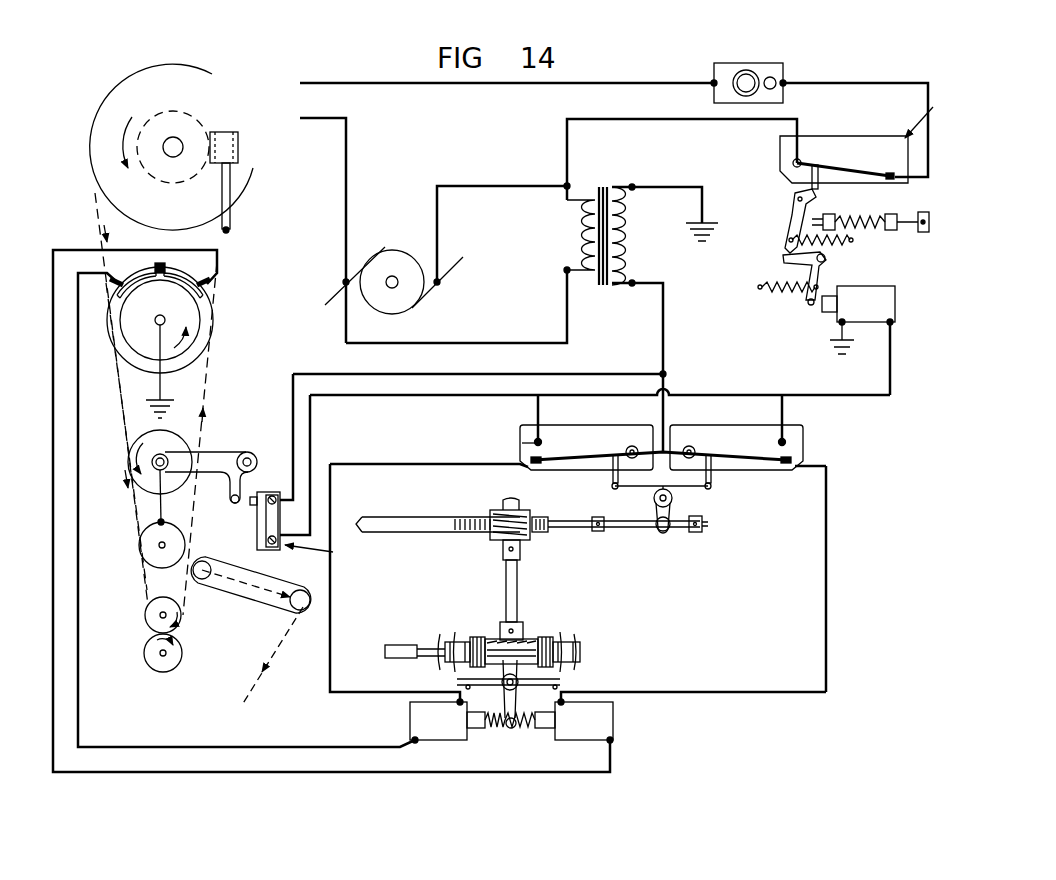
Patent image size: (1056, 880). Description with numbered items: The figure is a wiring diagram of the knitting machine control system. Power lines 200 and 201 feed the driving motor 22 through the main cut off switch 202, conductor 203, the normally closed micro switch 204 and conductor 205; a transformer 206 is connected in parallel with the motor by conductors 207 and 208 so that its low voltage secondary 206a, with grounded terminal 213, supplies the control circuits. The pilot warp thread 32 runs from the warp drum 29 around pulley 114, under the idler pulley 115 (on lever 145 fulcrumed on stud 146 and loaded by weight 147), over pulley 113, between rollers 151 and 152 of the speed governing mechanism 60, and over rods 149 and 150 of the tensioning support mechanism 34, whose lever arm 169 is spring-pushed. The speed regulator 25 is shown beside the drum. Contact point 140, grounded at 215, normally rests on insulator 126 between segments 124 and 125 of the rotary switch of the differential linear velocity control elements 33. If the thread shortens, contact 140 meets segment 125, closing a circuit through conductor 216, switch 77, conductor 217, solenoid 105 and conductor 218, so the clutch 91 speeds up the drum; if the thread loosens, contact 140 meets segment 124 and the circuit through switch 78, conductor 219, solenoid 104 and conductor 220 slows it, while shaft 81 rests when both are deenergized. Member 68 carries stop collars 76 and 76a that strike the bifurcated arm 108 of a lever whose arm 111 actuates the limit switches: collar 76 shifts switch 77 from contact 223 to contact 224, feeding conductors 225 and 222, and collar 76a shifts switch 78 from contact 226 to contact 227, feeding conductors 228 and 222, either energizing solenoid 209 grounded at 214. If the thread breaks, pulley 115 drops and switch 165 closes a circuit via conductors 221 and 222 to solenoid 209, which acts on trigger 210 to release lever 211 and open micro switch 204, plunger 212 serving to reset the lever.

The warp drum 29 is at (117, 105).
The pilot warp thread 32 is at (97, 195).
The speed regulator 25 is at (231, 194).
The segment 124 is at (132, 275).
The insulator 126 is at (160, 272).
The segment 125 is at (187, 275).
The pulley 113 is at (213, 336).
The pulley 114 is at (201, 319).
The contact point 140 is at (160, 314).
The grounding 215 is at (165, 402).
The differential linear velocity control elements 33 is at (111, 459).
The lever 145 is at (215, 452).
The stud 146 is at (249, 458).
The idler pulley 115 is at (177, 481).
The arm 169 is at (228, 500).
The weight 147 is at (158, 546).
The switch 165 is at (257, 538).
The roller 151 is at (163, 598).
The roller 152 is at (144, 657).
The warp thread speed governing mechanism 60 is at (128, 641).
The rod 149 is at (213, 580).
The rod 150 is at (292, 606).
The tensioning support mechanism 34 is at (276, 577).
The driving motor 22 is at (403, 304).
The line 200 is at (343, 79).
The line 201 is at (317, 121).
The conductor 208 is at (488, 342).
The main cut off switch 202 is at (733, 64).
The conductor 203 is at (860, 82).
The conductor 205 is at (611, 118).
The micro switch 204 is at (817, 136).
The conductor 207 is at (572, 192).
The transformer 206 is at (565, 227).
The low voltage secondary 206a is at (638, 249).
The grounded terminal 213 is at (668, 187).
The conductor 216 is at (665, 334).
The lever 211 is at (790, 212).
The plunger 212 is at (907, 215).
The trigger 210 is at (823, 268).
The solenoid 209 is at (883, 290).
The ground 214 is at (840, 332).
The conductor 221 is at (387, 374).
The conductor 222 is at (365, 398).
The conductor 228 is at (540, 412).
The conductor 225 is at (781, 413).
The contact 227 is at (522, 443).
The limit switch 78 is at (524, 432).
The limit switch 77 is at (803, 428).
The conductor 219 is at (417, 457).
The contact 224 is at (803, 448).
The conductor 217 is at (828, 593).
The contact 226 is at (531, 468).
The contact 223 is at (775, 468).
The arm 111 is at (637, 492).
The bifurcated arm 108 is at (650, 520).
The stop collar 76 is at (598, 532).
The stop collar 76a is at (694, 532).
The member 68 is at (413, 519).
The shaft 81 is at (519, 586).
The clutch 91 is at (520, 667).
The solenoid 104 is at (442, 738).
The solenoid 105 is at (607, 725).
The conductor 218 is at (270, 773).
The conductor 220 is at (234, 748).